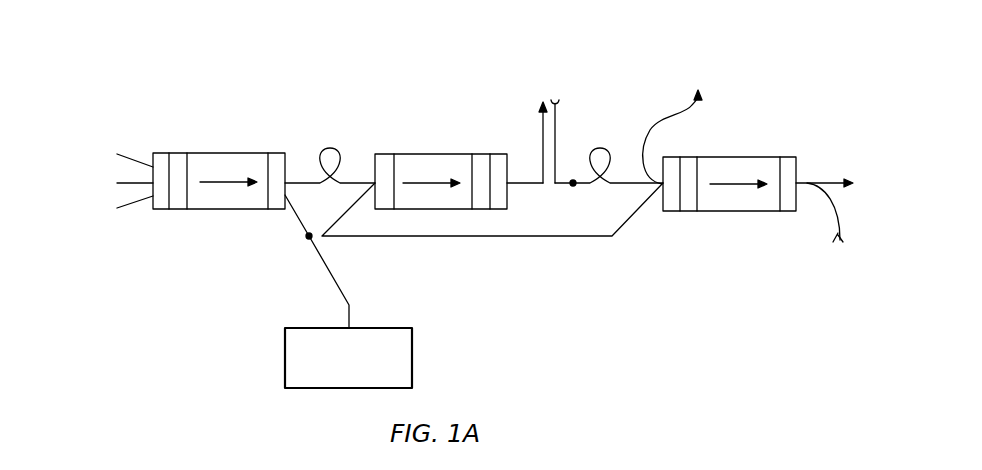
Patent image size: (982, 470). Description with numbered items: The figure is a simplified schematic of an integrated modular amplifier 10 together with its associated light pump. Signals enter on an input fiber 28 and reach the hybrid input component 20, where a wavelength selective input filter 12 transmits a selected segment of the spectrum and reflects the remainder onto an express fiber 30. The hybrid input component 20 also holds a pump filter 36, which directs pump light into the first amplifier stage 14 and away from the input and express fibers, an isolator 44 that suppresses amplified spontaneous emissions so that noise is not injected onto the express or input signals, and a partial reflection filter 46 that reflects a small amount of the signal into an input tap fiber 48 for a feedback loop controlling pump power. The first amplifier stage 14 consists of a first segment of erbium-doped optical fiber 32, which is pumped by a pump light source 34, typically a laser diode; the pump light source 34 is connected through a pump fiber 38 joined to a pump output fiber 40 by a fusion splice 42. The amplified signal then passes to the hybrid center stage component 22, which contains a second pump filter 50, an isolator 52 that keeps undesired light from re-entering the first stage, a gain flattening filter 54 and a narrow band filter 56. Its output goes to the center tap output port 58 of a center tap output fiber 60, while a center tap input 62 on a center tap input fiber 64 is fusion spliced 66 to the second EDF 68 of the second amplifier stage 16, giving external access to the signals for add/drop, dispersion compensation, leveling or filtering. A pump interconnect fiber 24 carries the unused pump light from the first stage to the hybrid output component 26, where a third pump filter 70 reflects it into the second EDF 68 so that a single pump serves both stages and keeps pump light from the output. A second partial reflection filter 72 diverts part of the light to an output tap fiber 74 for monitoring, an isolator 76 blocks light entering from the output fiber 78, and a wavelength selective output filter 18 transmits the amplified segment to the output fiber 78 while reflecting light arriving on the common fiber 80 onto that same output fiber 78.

The integrated modular amplifier 10 is at (110, 86).
The wavelength selective input filter 12 is at (163, 153).
The first amplifier stage 14 is at (330, 123).
The second amplifier stage 16 is at (618, 127).
The wavelength selective output filter 18 is at (788, 157).
The hybrid input component 20 is at (211, 168).
The hybrid center stage component 22 is at (441, 144).
The pump interconnect fiber 24 is at (552, 237).
The hybrid output component 26 is at (719, 169).
The input fiber 28 is at (118, 155).
The express fiber 30 is at (117, 208).
The first segment of erbium-doped optical fiber 32 is at (327, 148).
The pump light source 34 is at (413, 358).
The pump filter 36 is at (277, 153).
The pump fiber 38 is at (303, 222).
The pump output fiber 40 is at (335, 281).
The fusion splice 42 is at (308, 239).
The isolator 44 is at (217, 209).
The partial reflection filter 46 is at (180, 153).
The input tap fiber 48 is at (117, 184).
The second pump filter 50 is at (385, 154).
The isolator 52 is at (417, 154).
The gain flattening filter 54 is at (500, 154).
The narrow band filter 56 is at (483, 154).
The center tap output port 58 is at (541, 103).
The center tap output fiber 60 is at (541, 185).
The center tap input 62 is at (558, 102).
The center tap input fiber 64 is at (557, 165).
The fusion splice 66 is at (573, 185).
The second EDF 68 is at (602, 148).
The third pump filter 70 is at (668, 211).
The second partial reflection filter 72 is at (693, 211).
The output tap fiber 74 is at (694, 108).
The isolator 76 is at (727, 211).
The output fiber 78 is at (832, 178).
The common fiber 80 is at (830, 213).